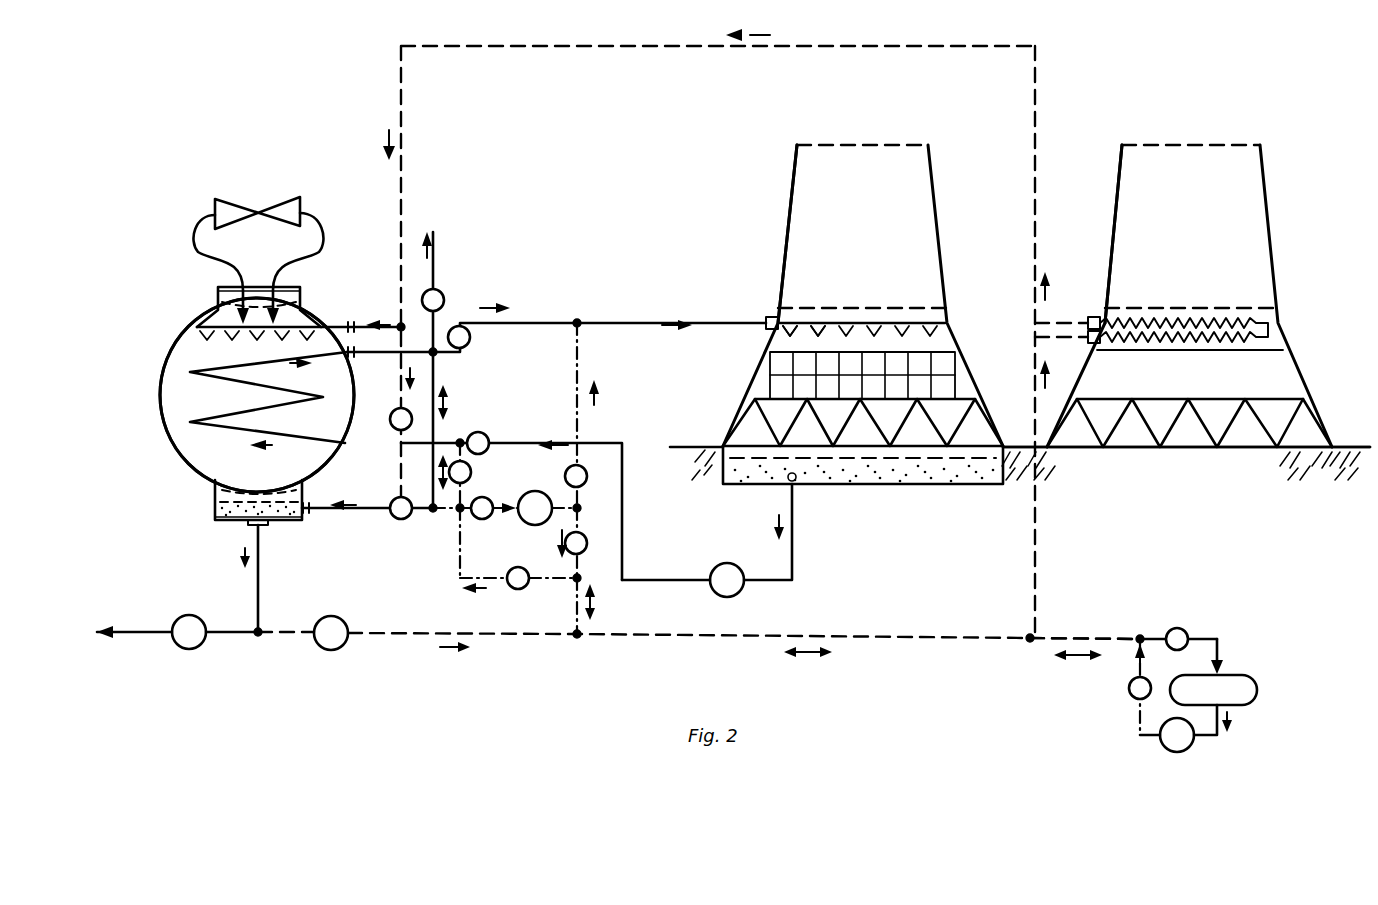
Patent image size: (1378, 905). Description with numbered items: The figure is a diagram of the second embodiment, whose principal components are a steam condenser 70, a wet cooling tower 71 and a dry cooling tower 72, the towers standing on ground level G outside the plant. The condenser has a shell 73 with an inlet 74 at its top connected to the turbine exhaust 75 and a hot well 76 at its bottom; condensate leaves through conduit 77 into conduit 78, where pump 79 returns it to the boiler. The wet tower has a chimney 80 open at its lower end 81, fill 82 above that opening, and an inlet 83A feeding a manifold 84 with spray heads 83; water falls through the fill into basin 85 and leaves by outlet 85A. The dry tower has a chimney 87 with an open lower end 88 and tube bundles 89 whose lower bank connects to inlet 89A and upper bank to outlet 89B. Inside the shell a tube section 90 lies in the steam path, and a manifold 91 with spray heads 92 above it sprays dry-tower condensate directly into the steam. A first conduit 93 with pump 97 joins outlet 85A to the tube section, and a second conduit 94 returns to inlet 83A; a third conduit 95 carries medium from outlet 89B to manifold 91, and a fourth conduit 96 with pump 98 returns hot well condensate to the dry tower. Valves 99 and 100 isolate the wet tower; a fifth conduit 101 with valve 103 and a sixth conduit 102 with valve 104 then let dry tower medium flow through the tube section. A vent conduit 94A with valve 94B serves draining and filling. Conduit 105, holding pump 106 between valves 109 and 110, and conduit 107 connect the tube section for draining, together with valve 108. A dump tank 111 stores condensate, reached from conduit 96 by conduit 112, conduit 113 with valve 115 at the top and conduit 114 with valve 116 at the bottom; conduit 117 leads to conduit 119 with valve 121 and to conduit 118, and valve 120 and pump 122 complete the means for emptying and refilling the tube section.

The steam condenser 70 is at (165, 368).
The wet cooling tower 71 is at (938, 210).
The dry cooling tower 72 is at (1272, 208).
The shell 73 is at (160, 396).
The inlet 74 is at (218, 292).
The turbine exhaust 75 is at (215, 196).
The hot well 76 is at (215, 510).
The conduit 77 is at (262, 572).
The conduit 78 is at (224, 630).
The pump 79 is at (185, 615).
The stack or chimney 80 is at (793, 190).
The open lower end 81 is at (978, 418).
The fill or packing 82 is at (770, 370).
The spray heads 83 is at (918, 335).
The inlet 83A is at (768, 318).
The manifold 84 is at (815, 320).
The water basin 85 is at (873, 470).
The outlet 85A is at (794, 482).
The stack or chimney 87 is at (1118, 196).
The open lower end 88 is at (1308, 416).
The tube bundles 89 is at (1174, 318).
The inlet 89A is at (1090, 343).
The outlet 89B is at (1092, 318).
The tube section 90 is at (215, 428).
The manifold 91 is at (200, 326).
The spray heads 92 is at (198, 333).
The first conduit 93 is at (692, 578).
The second conduit 94 is at (652, 322).
The vent conduit 94A is at (456, 326).
The valve 94B is at (437, 320).
The third conduit 95 is at (630, 46).
The fourth conduit 96 is at (900, 635).
The pump 97 is at (727, 563).
The pump 98 is at (331, 616).
The valve 99 is at (470, 337).
The valve 100 is at (456, 445).
The fifth conduit 101 is at (397, 356).
The sixth conduit 102 is at (445, 370).
The valve 103 is at (398, 412).
The valve 104 is at (396, 497).
The conduit 105 is at (580, 414).
The pump 106 is at (528, 522).
The conduit 107 is at (470, 432).
The valve 108 is at (490, 440).
The valve 109 is at (470, 472).
The valve 110 is at (565, 476).
The dump tank 111 is at (1258, 688).
The conduit 112 is at (1080, 634).
The conduit 113 is at (1222, 638).
The conduit 114 is at (1145, 740).
The valve 115 is at (1175, 627).
The valve 116 is at (1128, 694).
The conduit 117 is at (580, 623).
The conduit 118 is at (580, 565).
The conduit 119 is at (455, 550).
The valve 120 is at (584, 538).
The valve 121 is at (512, 588).
The pump 122 is at (1188, 750).
The ground level G is at (1345, 445).